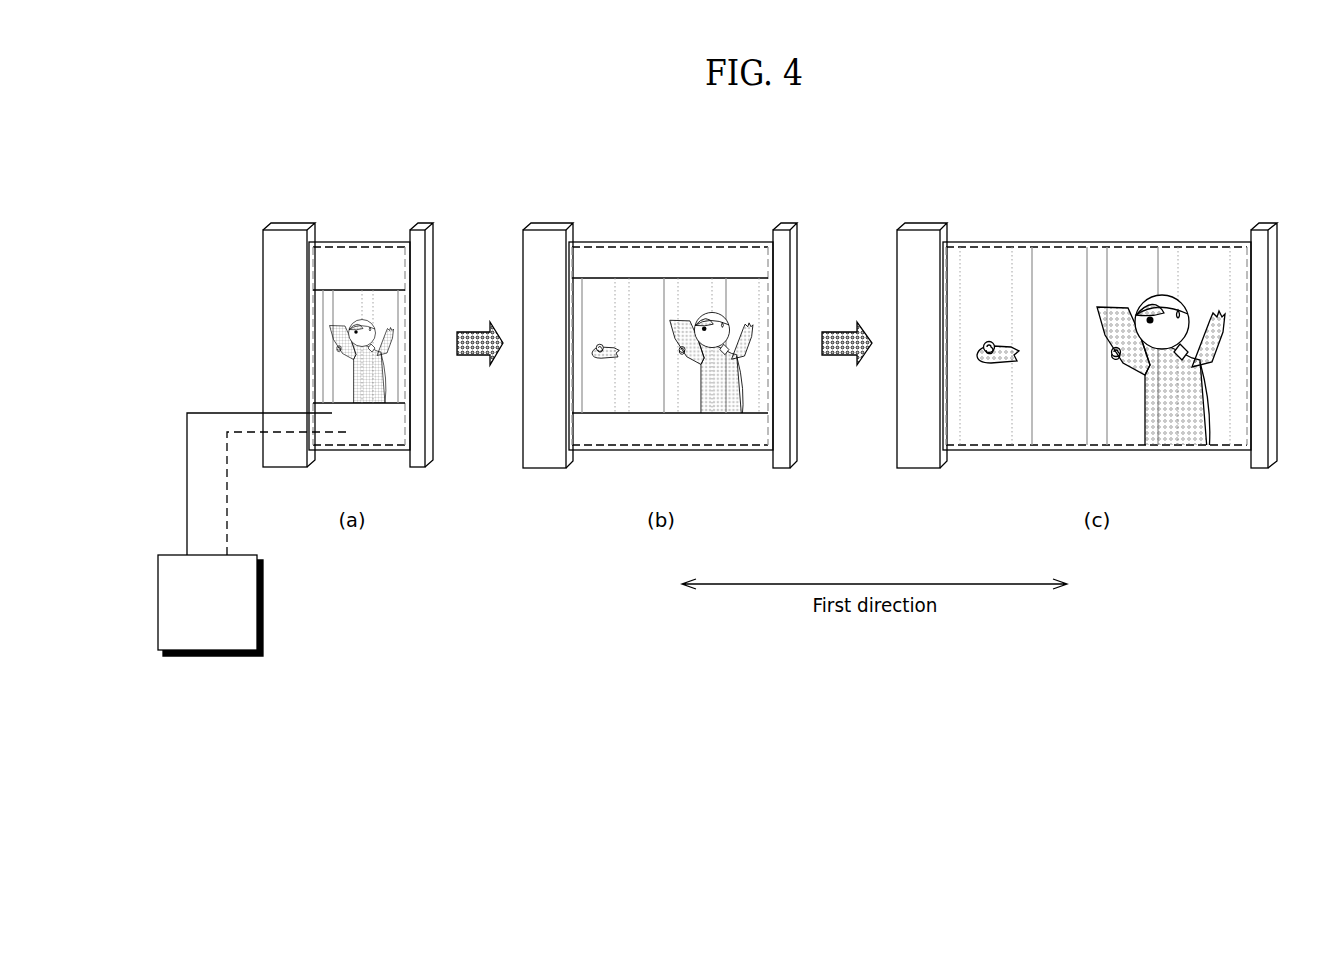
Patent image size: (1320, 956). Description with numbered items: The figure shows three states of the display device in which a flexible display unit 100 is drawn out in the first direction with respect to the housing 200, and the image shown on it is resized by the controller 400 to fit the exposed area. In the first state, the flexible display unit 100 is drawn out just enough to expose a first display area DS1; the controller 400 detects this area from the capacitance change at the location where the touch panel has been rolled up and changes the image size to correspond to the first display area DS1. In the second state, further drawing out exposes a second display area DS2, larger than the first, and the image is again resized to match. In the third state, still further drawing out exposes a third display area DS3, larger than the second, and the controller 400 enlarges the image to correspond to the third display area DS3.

The flexible display unit 100 is at (351, 307).
The housing 200 is at (277, 300).
The controller 400 is at (263, 604).
The first display area DS1 is at (376, 247).
The second display area DS2 is at (661, 247).
The third display area DS3 is at (1122, 247).